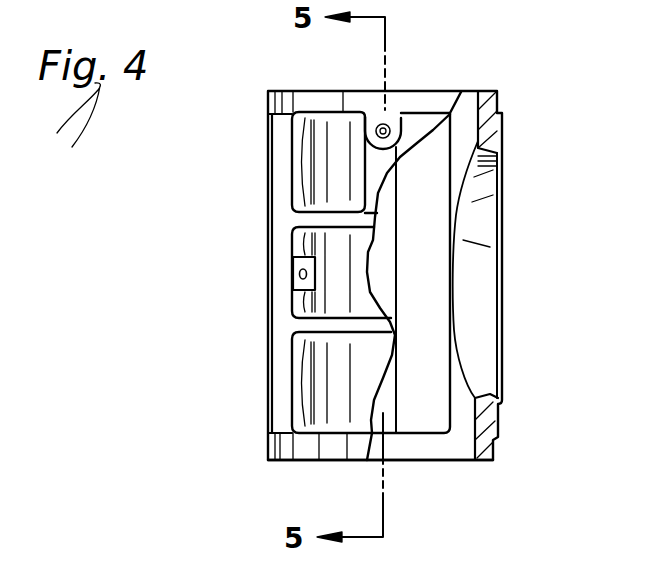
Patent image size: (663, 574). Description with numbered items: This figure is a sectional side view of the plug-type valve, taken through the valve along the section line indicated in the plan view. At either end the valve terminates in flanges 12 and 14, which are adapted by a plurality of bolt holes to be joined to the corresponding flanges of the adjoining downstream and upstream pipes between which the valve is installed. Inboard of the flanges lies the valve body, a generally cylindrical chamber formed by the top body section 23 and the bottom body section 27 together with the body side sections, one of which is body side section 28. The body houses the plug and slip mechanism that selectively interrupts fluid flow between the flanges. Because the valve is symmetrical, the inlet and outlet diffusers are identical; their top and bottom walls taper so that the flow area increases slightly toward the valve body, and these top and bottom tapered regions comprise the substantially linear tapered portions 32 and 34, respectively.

The flange 12 is at (290, 126).
The flange 14 is at (502, 117).
The top body section 23 is at (437, 90).
The bottom body section 27 is at (454, 460).
The body side section 28 is at (337, 263).
The linear tapered portion 32 is at (501, 186).
The linear tapered portion 34 is at (485, 397).